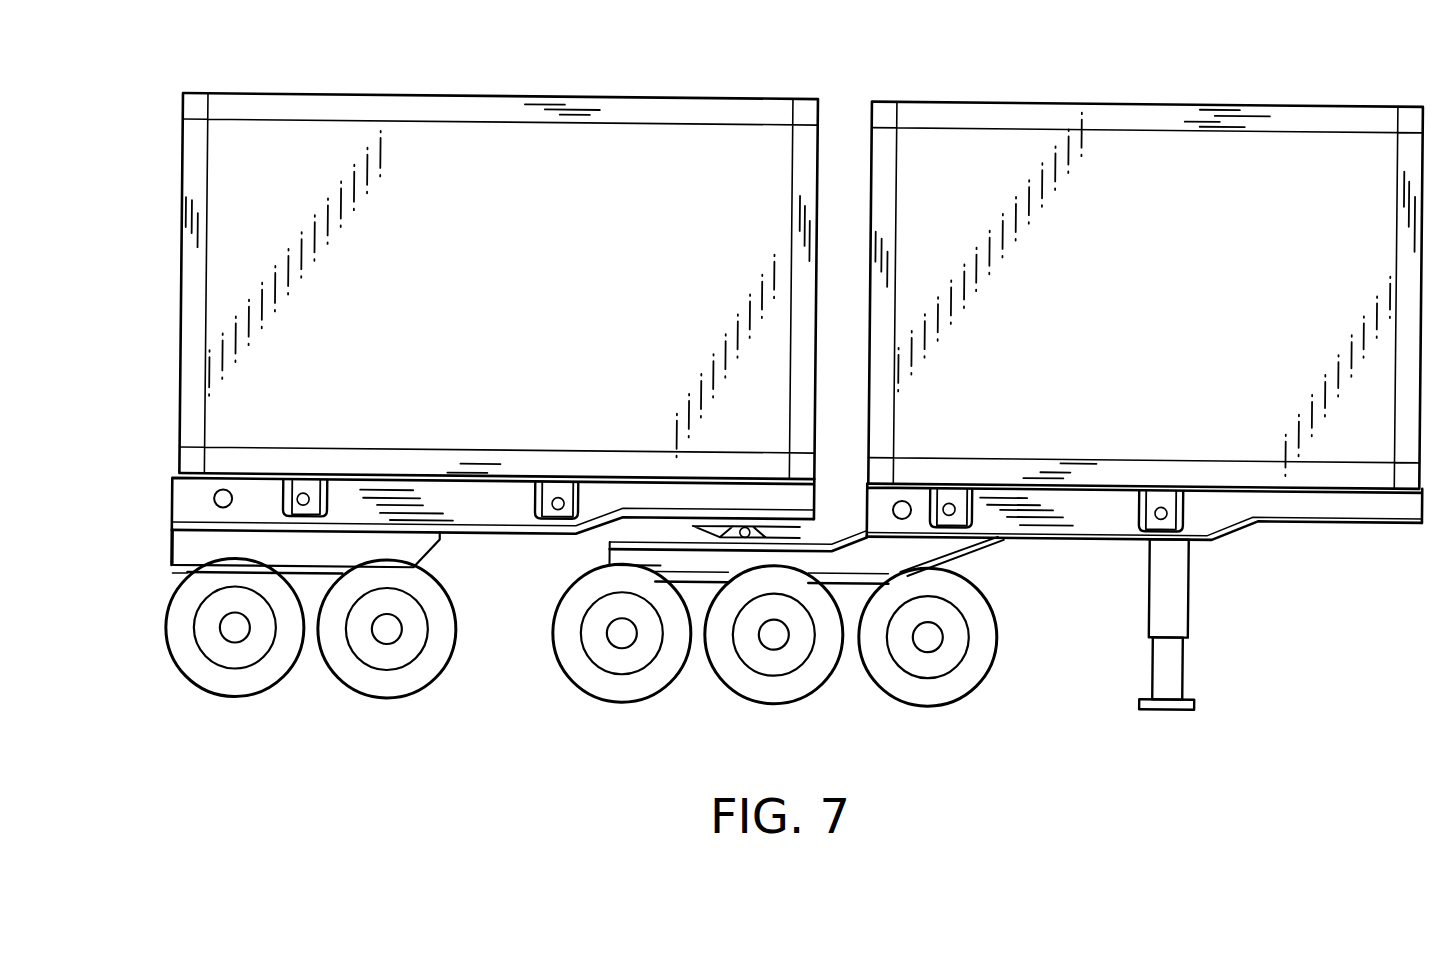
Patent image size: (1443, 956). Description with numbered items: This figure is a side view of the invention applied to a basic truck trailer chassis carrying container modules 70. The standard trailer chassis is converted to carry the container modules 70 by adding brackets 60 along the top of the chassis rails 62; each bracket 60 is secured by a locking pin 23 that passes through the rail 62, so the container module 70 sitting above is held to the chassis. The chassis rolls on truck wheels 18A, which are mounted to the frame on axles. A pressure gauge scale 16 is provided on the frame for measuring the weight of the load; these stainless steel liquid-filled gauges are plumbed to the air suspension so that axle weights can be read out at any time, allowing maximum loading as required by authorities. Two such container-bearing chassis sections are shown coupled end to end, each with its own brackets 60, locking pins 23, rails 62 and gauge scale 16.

The container module 70 is at (636, 131).
The rail 62 is at (497, 509).
The bracket 60 is at (283, 490).
The locking pin 23 is at (307, 492).
The pressure gauge scale 16 is at (218, 497).
The truck wheels 18A is at (432, 672).